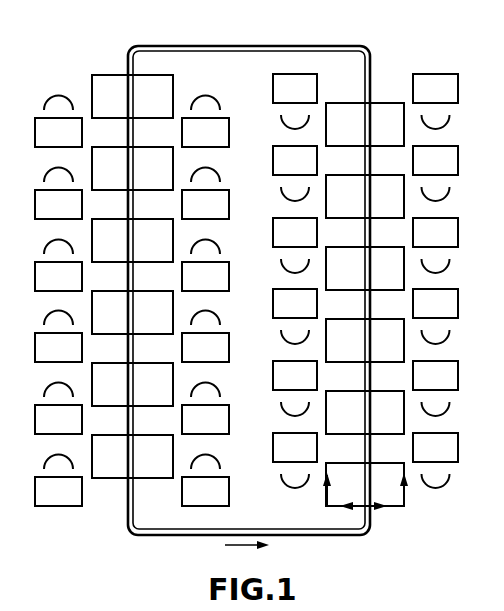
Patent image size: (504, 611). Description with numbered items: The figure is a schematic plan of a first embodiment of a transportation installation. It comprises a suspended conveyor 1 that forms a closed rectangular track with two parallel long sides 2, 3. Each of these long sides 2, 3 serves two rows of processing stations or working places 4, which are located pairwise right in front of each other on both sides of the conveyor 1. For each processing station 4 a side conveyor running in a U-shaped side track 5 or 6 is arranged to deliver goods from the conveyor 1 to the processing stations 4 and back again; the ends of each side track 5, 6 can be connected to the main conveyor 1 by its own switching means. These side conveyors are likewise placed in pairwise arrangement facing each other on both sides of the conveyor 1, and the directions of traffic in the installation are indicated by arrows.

The suspended conveyor 1 is at (282, 46).
The long side 2 is at (367, 279).
The long side 3 is at (127, 239).
The processing station 4 is at (58, 495).
The side track 5 is at (404, 491).
The side track 6 is at (327, 493).